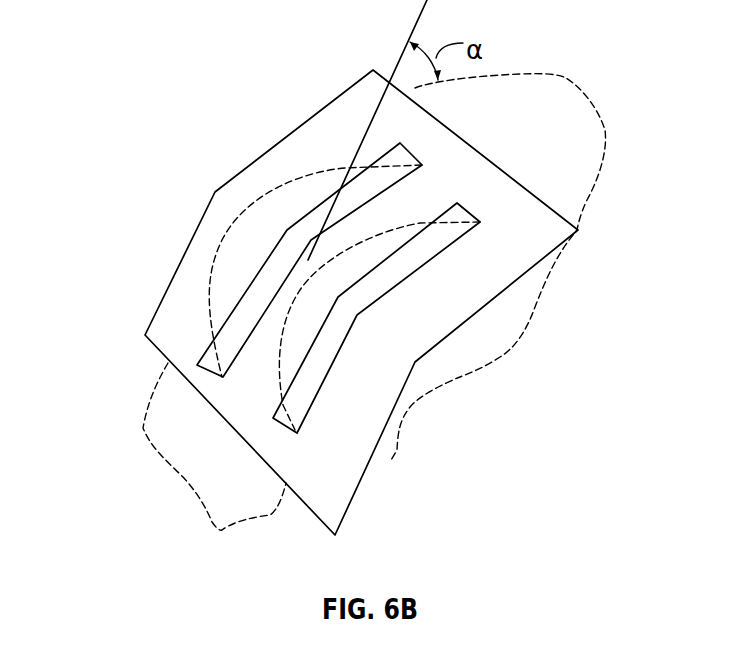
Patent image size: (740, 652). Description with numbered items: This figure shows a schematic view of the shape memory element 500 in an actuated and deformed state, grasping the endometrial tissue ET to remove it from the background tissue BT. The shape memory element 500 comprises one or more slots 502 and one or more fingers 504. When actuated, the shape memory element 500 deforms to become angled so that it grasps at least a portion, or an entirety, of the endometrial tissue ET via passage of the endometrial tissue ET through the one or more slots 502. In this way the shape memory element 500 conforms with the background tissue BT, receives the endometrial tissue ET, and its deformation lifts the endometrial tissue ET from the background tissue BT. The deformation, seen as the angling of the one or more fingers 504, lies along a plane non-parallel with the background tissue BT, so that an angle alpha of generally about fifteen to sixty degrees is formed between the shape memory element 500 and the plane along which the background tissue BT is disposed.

The shape memory element 500 is at (542, 240).
The slots 502 is at (255, 295).
The fingers 504 is at (268, 331).
The endometrial tissue ET is at (300, 176).
The background tissue BT is at (550, 98).